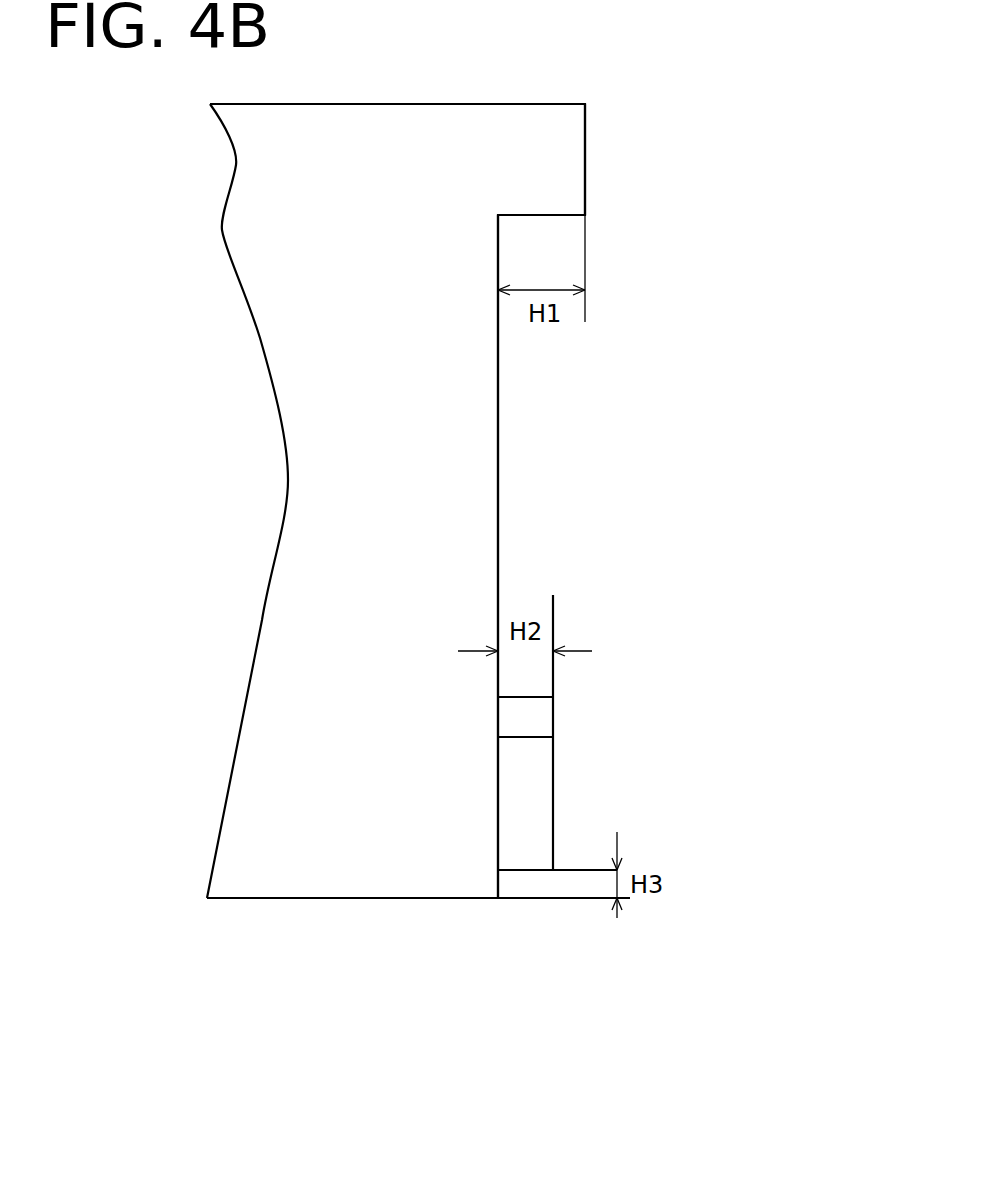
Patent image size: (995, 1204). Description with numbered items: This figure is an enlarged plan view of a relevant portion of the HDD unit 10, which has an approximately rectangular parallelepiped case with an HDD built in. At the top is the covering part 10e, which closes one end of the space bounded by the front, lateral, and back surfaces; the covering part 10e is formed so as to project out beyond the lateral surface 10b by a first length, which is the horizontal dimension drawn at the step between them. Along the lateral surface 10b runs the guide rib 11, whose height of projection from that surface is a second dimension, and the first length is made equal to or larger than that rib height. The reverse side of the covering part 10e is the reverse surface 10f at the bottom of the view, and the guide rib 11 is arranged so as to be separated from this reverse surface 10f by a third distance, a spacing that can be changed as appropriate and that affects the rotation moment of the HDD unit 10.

The HDD unit 10 is at (312, 523).
The covering part 10e is at (585, 170).
The lateral surface 10b is at (498, 517).
The reverse surface 10f is at (400, 898).
The guide rib 11 is at (540, 798).